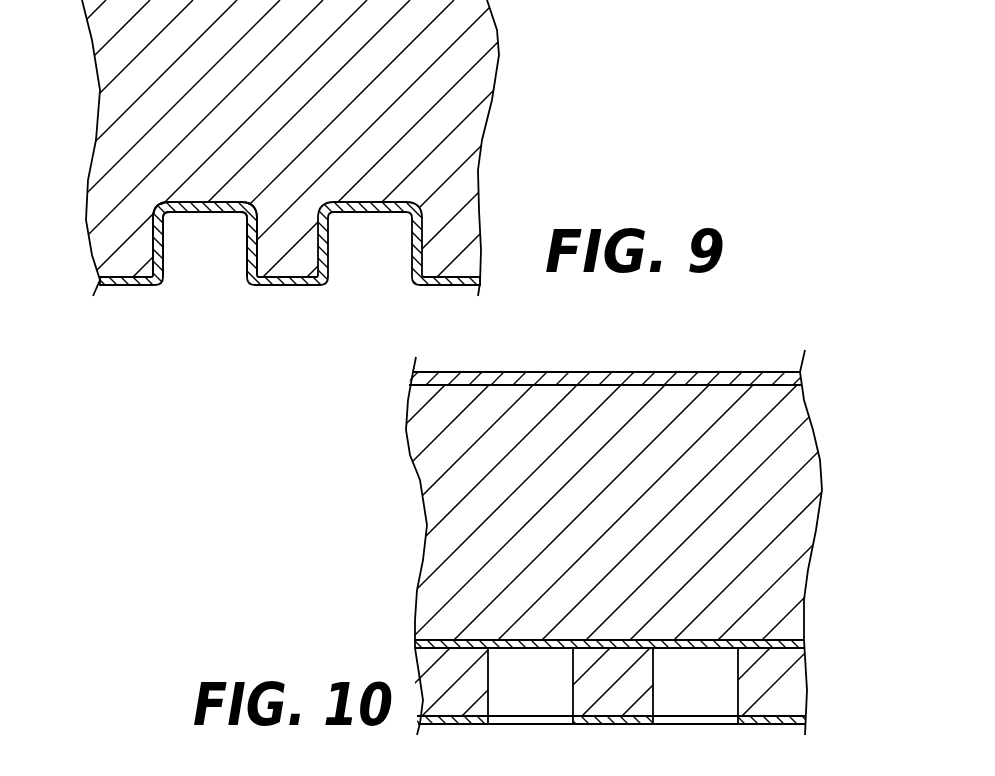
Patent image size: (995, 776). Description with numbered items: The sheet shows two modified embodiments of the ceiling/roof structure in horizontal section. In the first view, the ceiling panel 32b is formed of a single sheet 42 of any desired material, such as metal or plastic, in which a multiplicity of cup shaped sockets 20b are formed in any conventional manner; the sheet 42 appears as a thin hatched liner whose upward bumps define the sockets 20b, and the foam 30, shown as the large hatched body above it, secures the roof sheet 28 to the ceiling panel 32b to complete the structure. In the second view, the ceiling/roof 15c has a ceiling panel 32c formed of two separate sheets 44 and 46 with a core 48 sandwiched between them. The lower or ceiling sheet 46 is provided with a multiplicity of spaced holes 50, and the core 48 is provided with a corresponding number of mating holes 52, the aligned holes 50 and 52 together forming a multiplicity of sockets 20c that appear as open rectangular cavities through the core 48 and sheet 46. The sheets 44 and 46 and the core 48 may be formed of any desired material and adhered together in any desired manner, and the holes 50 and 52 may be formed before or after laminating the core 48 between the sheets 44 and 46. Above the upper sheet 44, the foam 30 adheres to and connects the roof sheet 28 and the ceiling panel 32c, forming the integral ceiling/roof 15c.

In FIG. 9, the foam 30 is at (462, 93).
In FIG. 10, the foam 30 is at (442, 548).
In FIG. 9, the ceiling panel 32b is at (82, 236).
In FIG. 9, the single sheet 42 is at (122, 285).
In FIG. 9, the cup shaped sockets 20b is at (162, 272).
In FIG. 10, the roof sheet 28 is at (582, 372).
In FIG. 10, the ceiling/roof 15c is at (733, 361).
In FIG. 10, the ceiling panel 32c is at (411, 709).
In FIG. 10, the sheet 44 is at (415, 643).
In FIG. 10, the core 48 is at (778, 670).
In FIG. 10, the sockets 20c is at (549, 700).
In FIG. 10, the mating holes 52 is at (655, 675).
In FIG. 10, the spaced holes 50 is at (485, 720).
In FIG. 10, the lower or ceiling sheet 46 is at (788, 720).